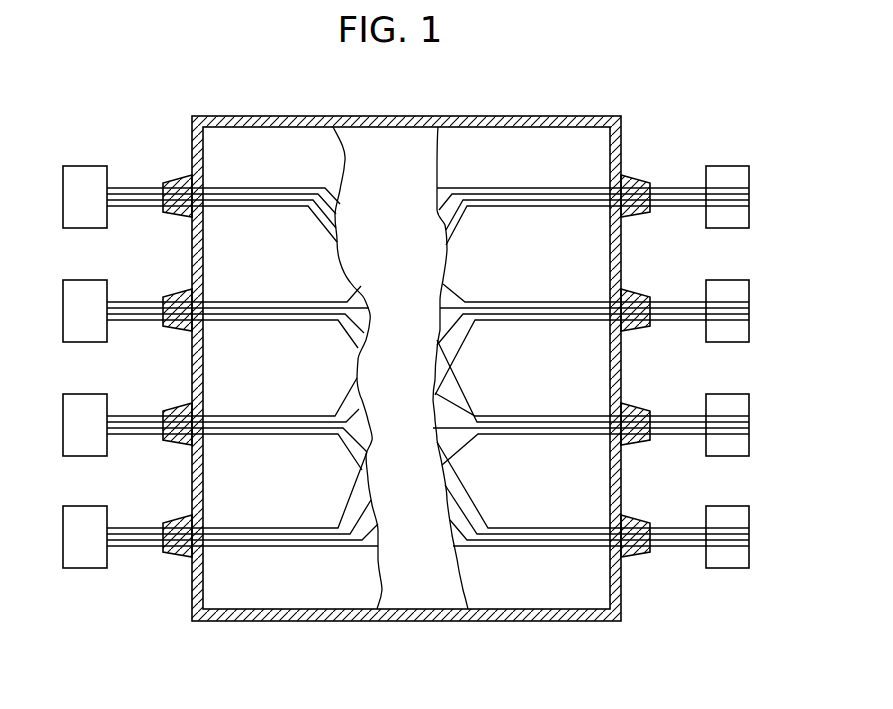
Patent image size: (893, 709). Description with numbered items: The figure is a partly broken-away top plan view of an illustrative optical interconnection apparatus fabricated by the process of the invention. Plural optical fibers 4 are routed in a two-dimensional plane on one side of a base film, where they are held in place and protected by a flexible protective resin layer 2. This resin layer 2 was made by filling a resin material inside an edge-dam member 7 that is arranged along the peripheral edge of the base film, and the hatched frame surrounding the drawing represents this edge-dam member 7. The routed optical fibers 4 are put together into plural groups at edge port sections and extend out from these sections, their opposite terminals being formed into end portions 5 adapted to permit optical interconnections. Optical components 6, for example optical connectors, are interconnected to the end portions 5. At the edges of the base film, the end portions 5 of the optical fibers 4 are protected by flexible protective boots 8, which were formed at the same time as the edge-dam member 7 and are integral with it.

The flexible protective resin layer 2 is at (500, 600).
The optical fibers 4 is at (266, 188).
The end portions 5 is at (146, 190).
The optical components 6 is at (84, 185).
The edge-dam member 7 is at (548, 116).
The flexible protective boots 8 is at (177, 553).